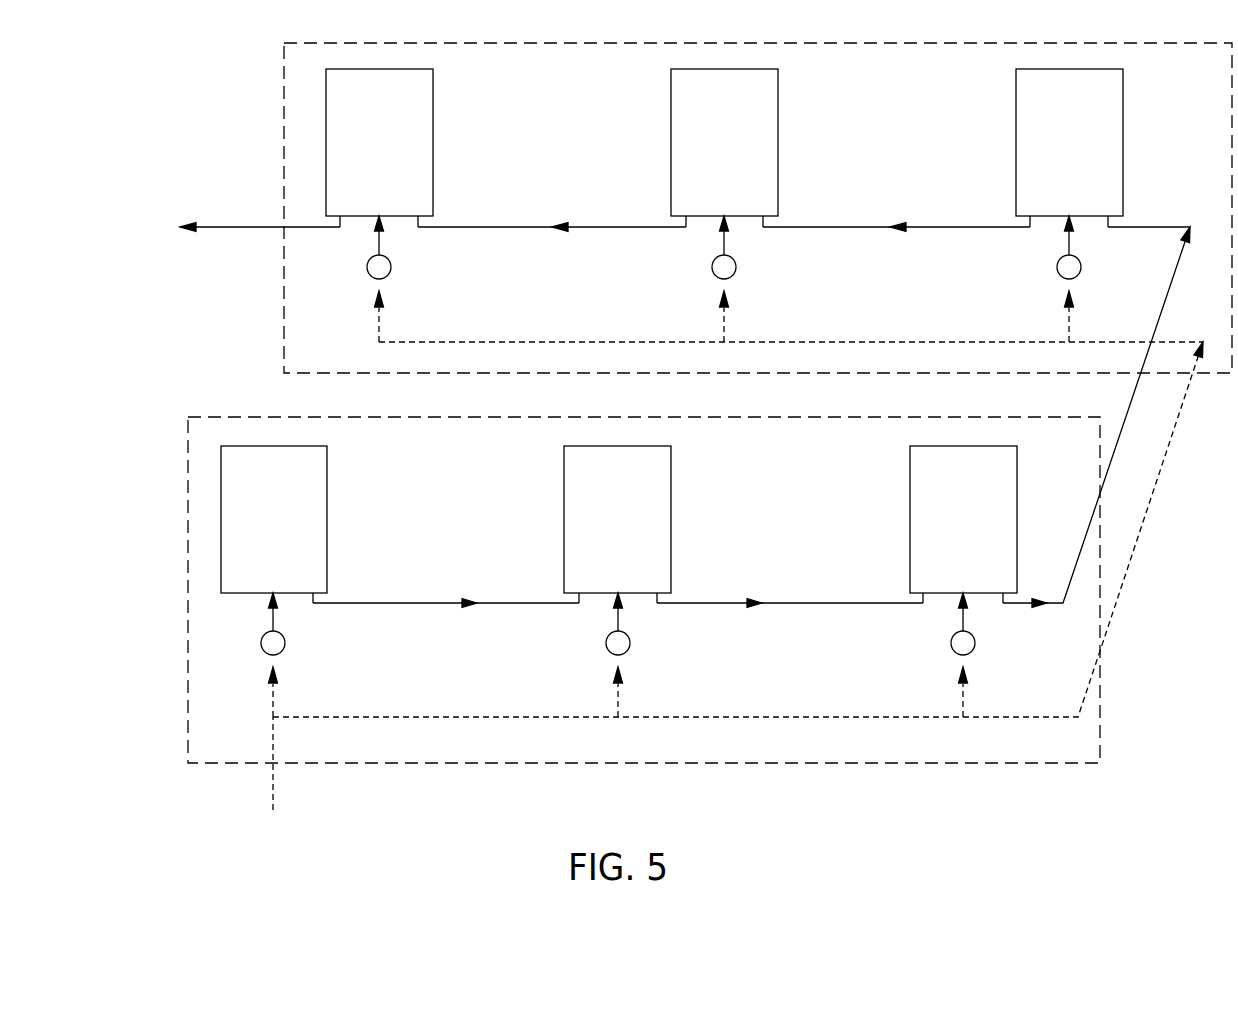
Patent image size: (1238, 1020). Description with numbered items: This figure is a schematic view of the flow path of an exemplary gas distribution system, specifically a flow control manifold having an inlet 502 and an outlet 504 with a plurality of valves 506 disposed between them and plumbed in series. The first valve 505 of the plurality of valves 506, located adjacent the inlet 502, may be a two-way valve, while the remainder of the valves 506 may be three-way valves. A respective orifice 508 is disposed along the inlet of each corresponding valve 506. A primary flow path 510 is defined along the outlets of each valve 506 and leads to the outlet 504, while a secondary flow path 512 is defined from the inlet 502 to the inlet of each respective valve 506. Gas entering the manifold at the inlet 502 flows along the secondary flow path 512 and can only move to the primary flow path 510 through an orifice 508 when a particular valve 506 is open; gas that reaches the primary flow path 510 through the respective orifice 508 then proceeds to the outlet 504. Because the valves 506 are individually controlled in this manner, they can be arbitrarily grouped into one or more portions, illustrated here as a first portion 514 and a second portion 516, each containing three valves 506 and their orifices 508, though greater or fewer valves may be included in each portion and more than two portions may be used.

The inlet 502 is at (273, 792).
The outlet 504 is at (221, 227).
The first valve 505 is at (290, 520).
The valve 506 is at (433, 100).
The orifice 508 is at (391, 265).
The primary flow path 510 is at (418, 578).
The secondary flow path 512 is at (447, 738).
The first portion 514 is at (188, 462).
The second portion 516 is at (284, 348).